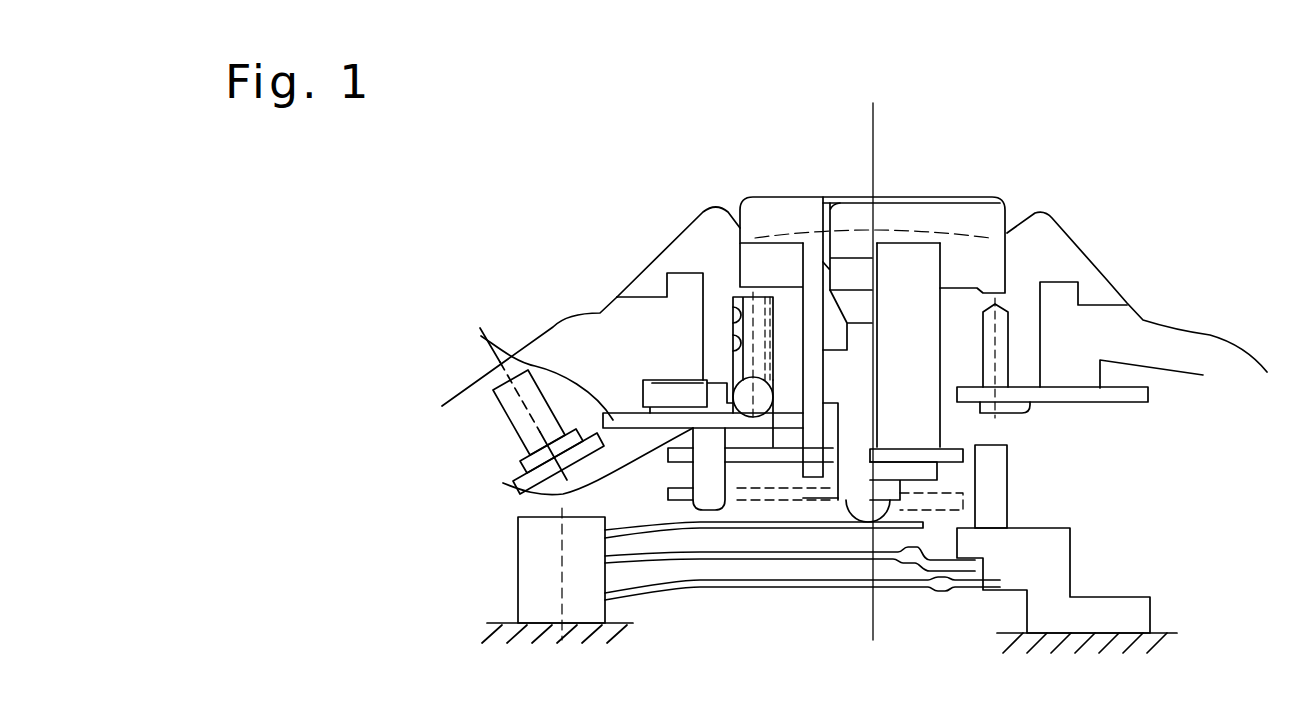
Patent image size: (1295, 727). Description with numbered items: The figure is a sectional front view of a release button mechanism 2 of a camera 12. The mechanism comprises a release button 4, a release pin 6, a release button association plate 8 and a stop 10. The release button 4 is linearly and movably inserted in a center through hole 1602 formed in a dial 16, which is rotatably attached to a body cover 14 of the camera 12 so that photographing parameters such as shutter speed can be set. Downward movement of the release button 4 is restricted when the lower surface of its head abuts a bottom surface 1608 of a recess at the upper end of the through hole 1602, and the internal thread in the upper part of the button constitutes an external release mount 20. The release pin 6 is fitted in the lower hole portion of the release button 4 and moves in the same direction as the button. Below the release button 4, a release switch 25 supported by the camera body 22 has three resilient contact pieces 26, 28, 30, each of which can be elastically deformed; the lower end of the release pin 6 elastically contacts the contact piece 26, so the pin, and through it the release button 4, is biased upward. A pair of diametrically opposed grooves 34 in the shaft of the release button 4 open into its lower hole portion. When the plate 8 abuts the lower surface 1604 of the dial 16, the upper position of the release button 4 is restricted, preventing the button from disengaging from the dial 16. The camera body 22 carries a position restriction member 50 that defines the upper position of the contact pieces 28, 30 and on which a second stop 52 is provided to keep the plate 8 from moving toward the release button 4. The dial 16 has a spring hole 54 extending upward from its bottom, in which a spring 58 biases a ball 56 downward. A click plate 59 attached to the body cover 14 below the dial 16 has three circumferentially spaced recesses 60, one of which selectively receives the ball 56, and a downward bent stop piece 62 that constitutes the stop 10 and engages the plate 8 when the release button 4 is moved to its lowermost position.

The release button mechanism 2 is at (503, 195).
The release button 4 is at (982, 200).
The release pin 6 is at (850, 484).
The release button association plate 8 is at (757, 453).
The stop 10 is at (703, 478).
The camera 12 is at (1230, 320).
The body cover 14 is at (553, 343).
The dial 16 is at (693, 233).
The external release mount 20 is at (843, 203).
The camera body 22 is at (1170, 643).
The release switch 25 is at (503, 580).
The contact piece 26 is at (910, 563).
The contact piece 28 is at (947, 590).
The contact piece 30 is at (997, 593).
The grooves 34 is at (893, 458).
The position restriction member 50 is at (1053, 580).
The second stop 52 is at (1008, 465).
The spring hole 54 is at (732, 362).
The ball 56 is at (615, 418).
The spring 58 is at (733, 305).
The click plate 59 is at (500, 390).
The recesses 60 is at (503, 483).
The stop piece 62 is at (681, 515).
The center through hole 1602 is at (937, 312).
The lower surface 1604 is at (788, 447).
The bottom surface 1608 is at (783, 285).